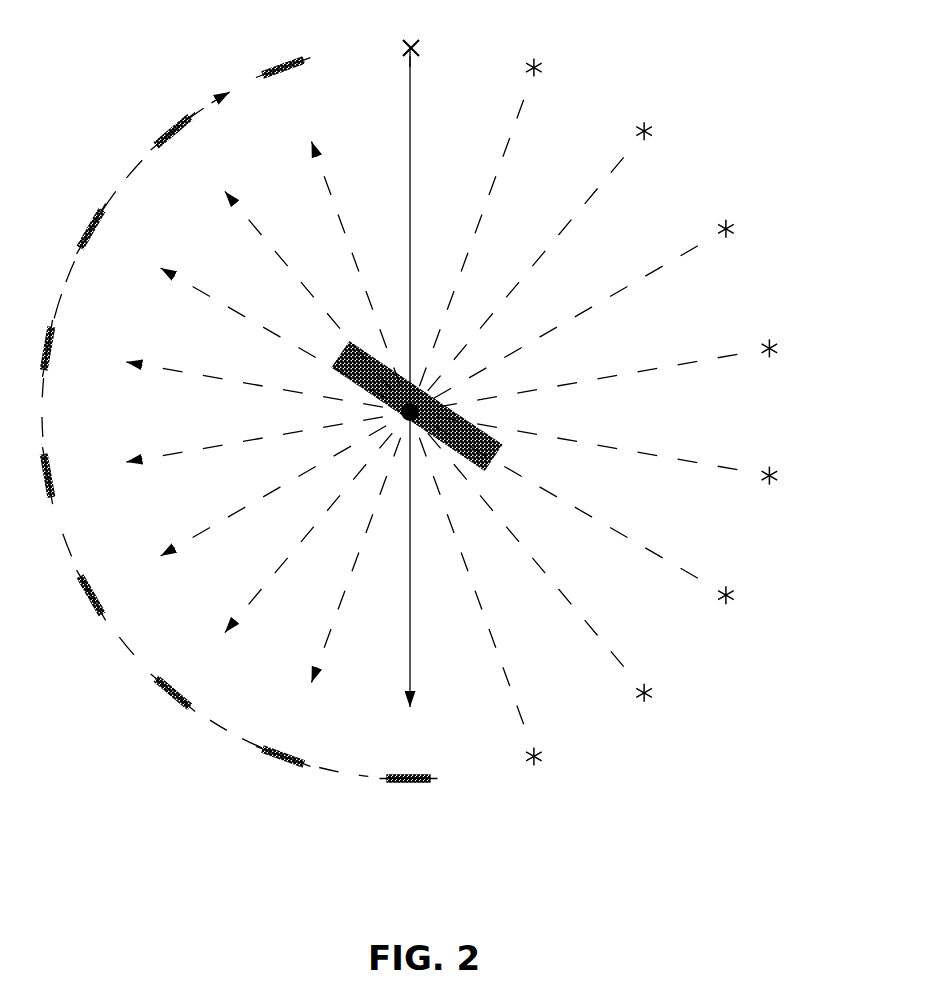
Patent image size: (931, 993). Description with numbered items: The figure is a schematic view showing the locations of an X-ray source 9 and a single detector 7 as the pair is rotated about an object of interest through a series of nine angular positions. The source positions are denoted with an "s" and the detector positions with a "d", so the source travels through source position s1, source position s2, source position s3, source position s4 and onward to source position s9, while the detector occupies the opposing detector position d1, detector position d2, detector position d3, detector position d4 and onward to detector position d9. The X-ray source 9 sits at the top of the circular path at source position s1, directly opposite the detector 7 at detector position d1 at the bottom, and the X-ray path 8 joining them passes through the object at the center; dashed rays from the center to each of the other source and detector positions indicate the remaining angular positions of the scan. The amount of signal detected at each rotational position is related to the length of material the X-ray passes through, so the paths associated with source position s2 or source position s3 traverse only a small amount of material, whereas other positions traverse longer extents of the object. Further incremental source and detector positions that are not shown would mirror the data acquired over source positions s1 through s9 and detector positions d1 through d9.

The detector 7 is at (409, 805).
The central beam axis 8 is at (423, 381).
The X-ray source 9 is at (398, 32).
The source position 1 s1 is at (433, 73).
The source position 2 s2 is at (551, 89).
The source position 3 s3 is at (644, 154).
The source position 4 s4 is at (731, 250).
The source position 9 s9 is at (537, 778).
The detector position 1 d1 is at (405, 756).
The detector position 2 d2 is at (282, 737).
The detector position 3 d3 is at (172, 672).
The detector position 4 d4 is at (99, 579).
The detector position 9 d9 is at (283, 92).